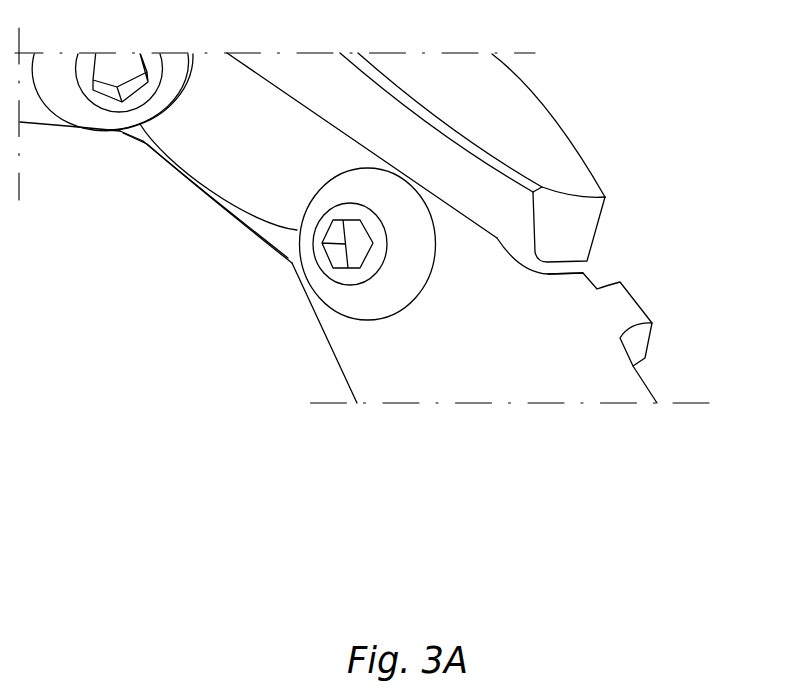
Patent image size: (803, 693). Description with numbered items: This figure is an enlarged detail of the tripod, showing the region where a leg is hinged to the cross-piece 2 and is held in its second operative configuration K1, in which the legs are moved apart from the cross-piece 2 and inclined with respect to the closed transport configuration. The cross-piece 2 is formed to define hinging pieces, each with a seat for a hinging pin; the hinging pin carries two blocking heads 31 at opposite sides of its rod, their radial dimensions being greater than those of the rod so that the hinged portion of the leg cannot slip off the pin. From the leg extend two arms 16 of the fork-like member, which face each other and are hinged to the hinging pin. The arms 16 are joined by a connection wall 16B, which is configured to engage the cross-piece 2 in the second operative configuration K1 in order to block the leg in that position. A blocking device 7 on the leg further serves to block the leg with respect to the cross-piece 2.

The cross-piece 2 is at (213, 233).
The blocking device 7 is at (533, 139).
The arms 16 is at (435, 337).
The connection wall 16B is at (562, 272).
The blocking heads 31 is at (387, 293).
The second operative configuration K1 is at (215, 348).